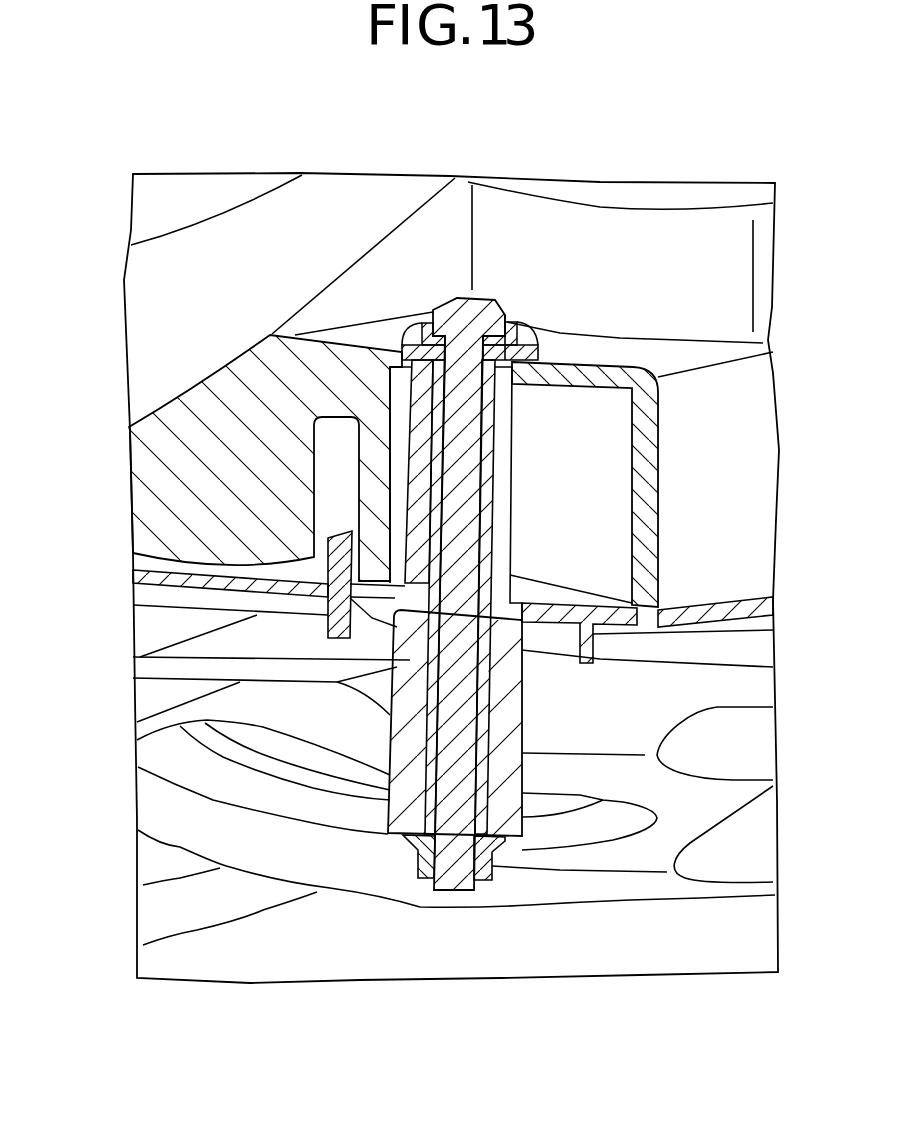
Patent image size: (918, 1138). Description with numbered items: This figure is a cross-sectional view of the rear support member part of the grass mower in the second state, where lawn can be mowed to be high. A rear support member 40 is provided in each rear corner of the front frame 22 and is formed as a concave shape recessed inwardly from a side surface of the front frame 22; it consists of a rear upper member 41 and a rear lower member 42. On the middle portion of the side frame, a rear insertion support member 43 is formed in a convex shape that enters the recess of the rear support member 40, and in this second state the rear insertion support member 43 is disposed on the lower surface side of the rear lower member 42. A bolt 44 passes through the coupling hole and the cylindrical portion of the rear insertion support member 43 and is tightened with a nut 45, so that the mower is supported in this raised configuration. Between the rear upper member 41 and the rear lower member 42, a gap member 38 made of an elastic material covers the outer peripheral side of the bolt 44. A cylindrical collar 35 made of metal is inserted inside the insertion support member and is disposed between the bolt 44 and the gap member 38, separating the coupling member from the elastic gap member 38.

The front frame 22 is at (602, 225).
The cylindrical collar 35 is at (395, 690).
The gap member 38 is at (420, 462).
The rear support member 40 is at (608, 375).
The rear upper member 41 is at (646, 385).
The rear lower member 42 is at (578, 605).
The rear insertion support member 43 is at (133, 657).
The bolt 44 is at (477, 320).
The nut 45 is at (433, 862).